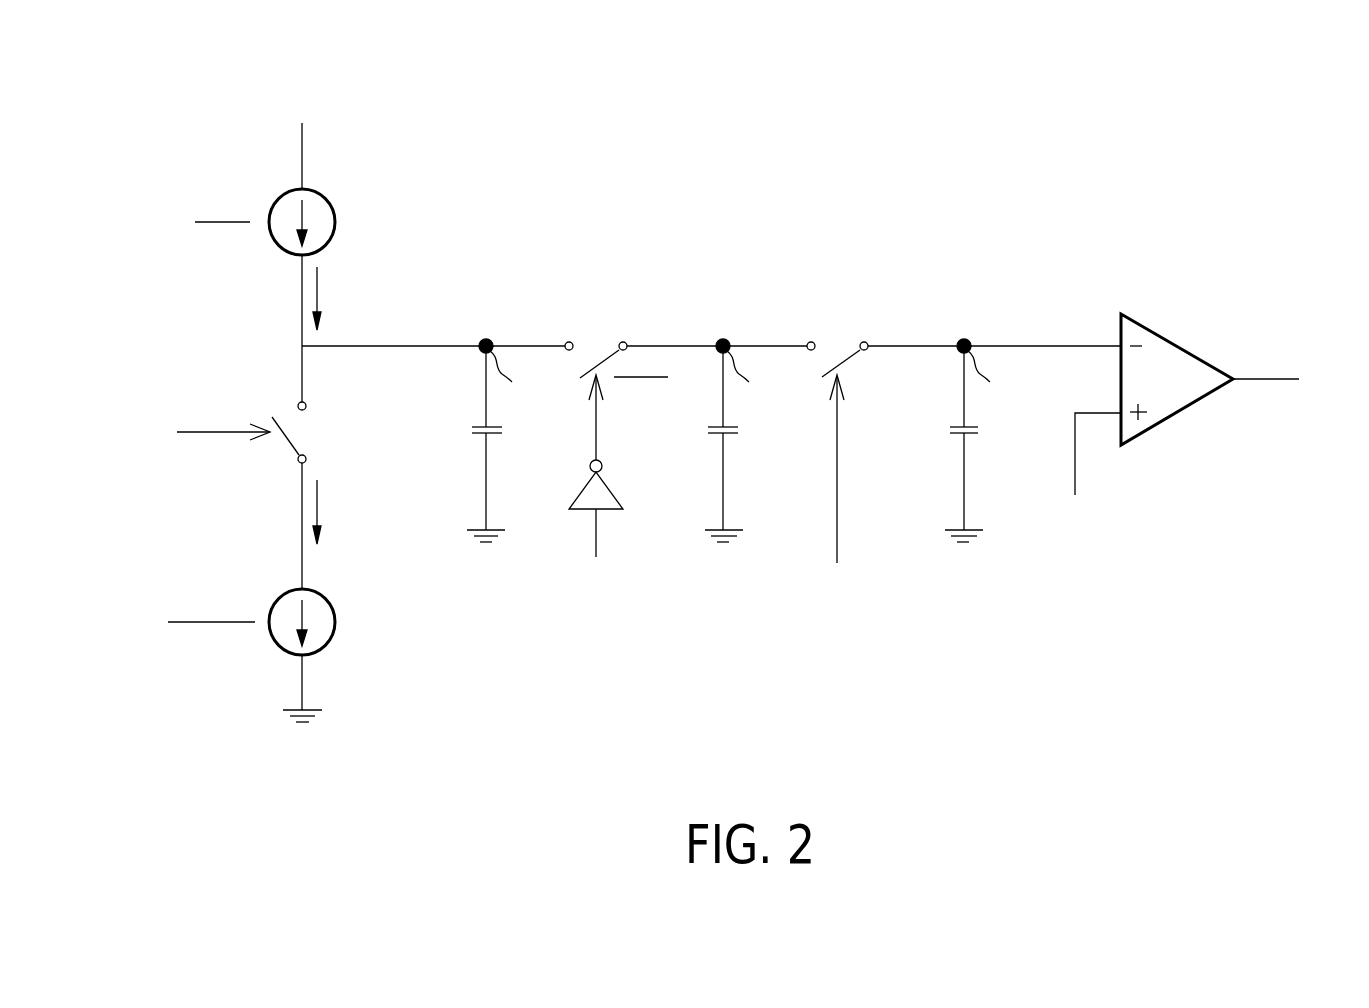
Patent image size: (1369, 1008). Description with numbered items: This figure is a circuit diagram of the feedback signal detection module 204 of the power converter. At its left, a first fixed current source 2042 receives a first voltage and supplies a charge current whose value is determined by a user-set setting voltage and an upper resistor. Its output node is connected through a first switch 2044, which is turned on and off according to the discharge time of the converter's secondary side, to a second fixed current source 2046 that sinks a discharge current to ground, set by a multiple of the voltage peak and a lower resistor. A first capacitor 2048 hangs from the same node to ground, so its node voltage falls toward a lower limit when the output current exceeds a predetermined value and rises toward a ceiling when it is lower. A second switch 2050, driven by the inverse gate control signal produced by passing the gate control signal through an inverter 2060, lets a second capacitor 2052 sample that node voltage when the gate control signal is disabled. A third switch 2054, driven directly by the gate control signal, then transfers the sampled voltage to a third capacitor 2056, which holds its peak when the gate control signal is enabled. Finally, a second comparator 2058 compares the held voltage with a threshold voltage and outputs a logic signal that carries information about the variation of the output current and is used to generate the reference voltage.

The feedback signal detection module 204 is at (1124, 124).
The first fixed current source 2042 is at (335, 221).
The first switch 2044 is at (310, 437).
The second fixed current source 2046 is at (335, 621).
The first capacitor 2048 is at (472, 431).
The second switch 2050 is at (592, 333).
The second capacitor 2052 is at (708, 431).
The third switch 2054 is at (834, 333).
The third capacitor 2056 is at (950, 431).
The second comparator 2058 is at (1178, 345).
The inverter 2060 is at (583, 490).